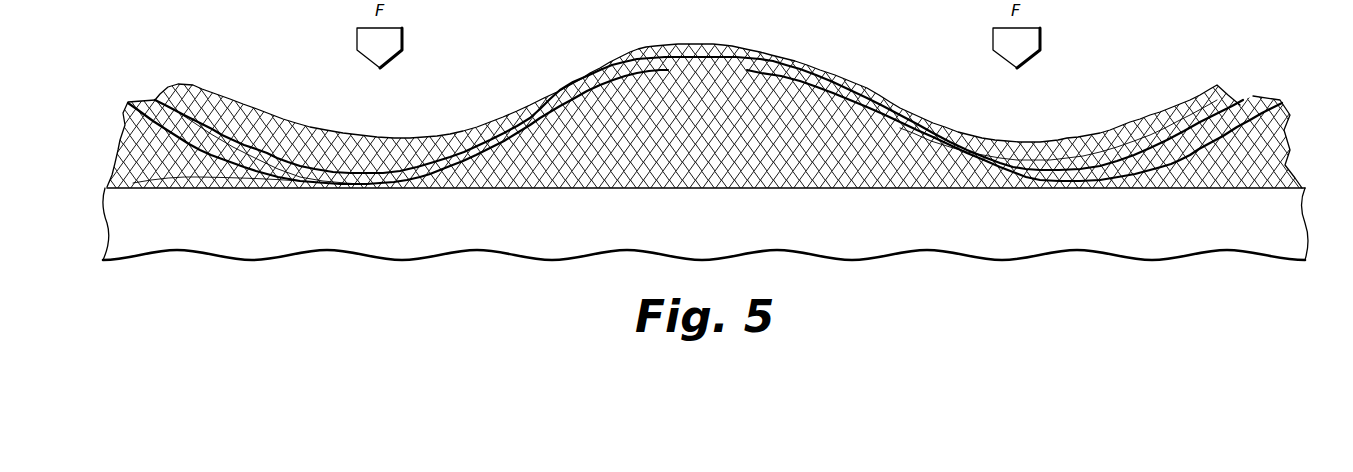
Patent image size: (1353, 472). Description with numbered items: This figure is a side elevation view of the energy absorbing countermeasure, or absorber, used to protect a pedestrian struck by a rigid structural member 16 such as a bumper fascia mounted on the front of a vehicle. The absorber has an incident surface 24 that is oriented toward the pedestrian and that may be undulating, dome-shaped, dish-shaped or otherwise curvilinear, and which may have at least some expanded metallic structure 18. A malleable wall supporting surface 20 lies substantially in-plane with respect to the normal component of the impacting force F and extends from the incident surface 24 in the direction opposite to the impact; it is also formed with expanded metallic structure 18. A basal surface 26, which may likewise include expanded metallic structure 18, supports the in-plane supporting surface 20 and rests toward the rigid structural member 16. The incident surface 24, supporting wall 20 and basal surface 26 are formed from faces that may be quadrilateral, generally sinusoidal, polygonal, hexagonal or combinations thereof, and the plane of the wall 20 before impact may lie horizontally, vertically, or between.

The rigid structural member 16 is at (1033, 218).
The expanded metallic structure 18 is at (235, 137).
The malleable wall supporting surface 20 is at (717, 130).
The incident surface 24 is at (723, 56).
The basal surface 26 is at (1178, 163).